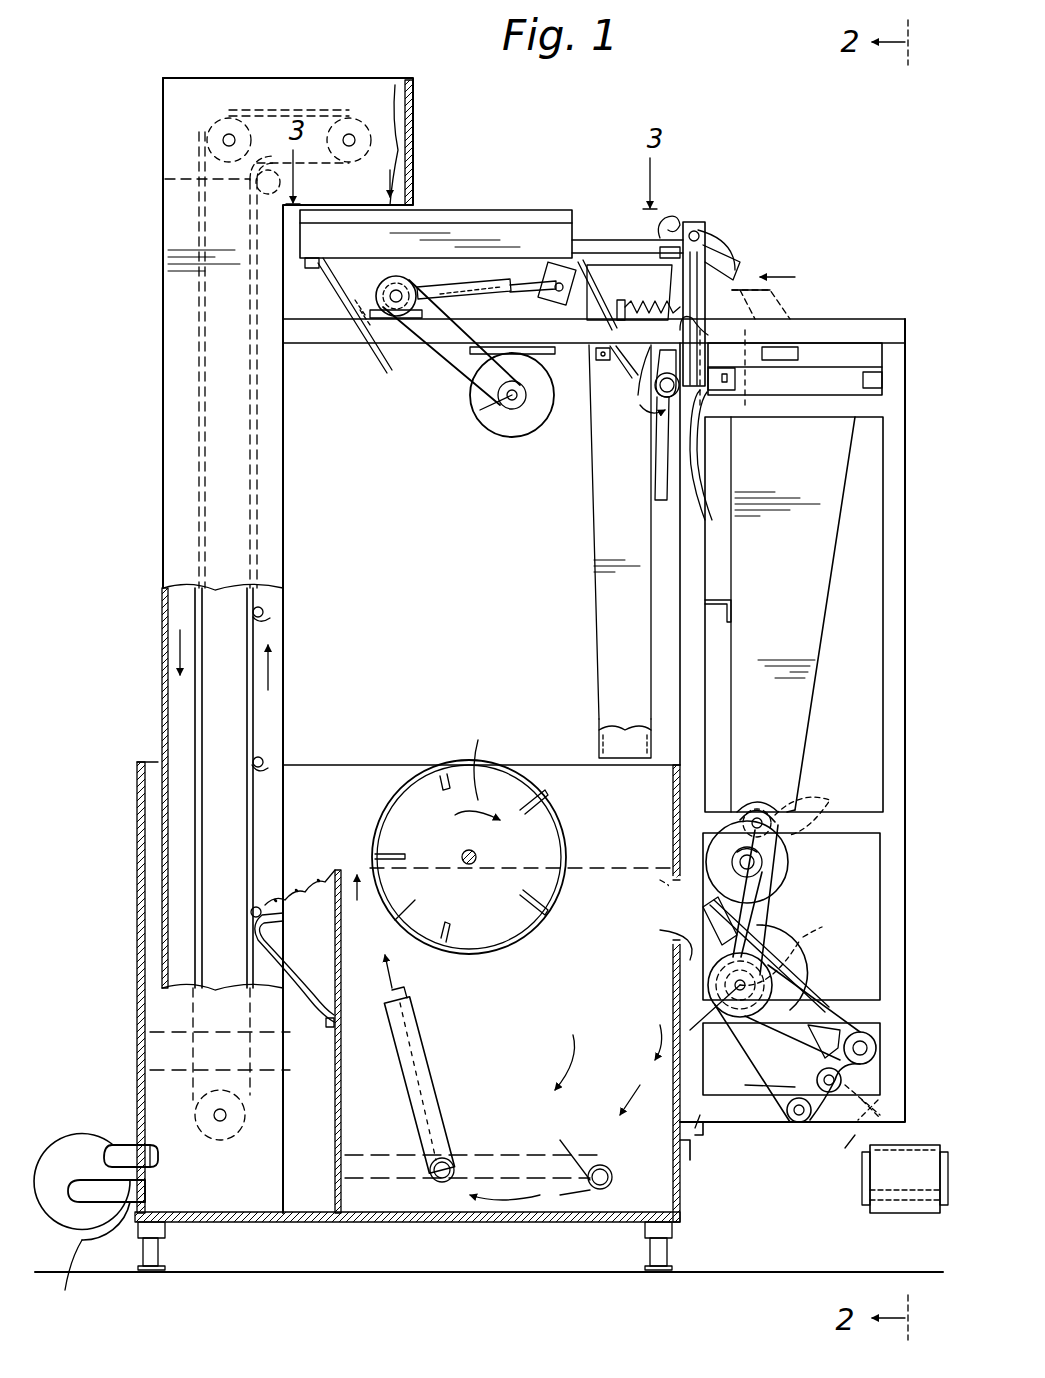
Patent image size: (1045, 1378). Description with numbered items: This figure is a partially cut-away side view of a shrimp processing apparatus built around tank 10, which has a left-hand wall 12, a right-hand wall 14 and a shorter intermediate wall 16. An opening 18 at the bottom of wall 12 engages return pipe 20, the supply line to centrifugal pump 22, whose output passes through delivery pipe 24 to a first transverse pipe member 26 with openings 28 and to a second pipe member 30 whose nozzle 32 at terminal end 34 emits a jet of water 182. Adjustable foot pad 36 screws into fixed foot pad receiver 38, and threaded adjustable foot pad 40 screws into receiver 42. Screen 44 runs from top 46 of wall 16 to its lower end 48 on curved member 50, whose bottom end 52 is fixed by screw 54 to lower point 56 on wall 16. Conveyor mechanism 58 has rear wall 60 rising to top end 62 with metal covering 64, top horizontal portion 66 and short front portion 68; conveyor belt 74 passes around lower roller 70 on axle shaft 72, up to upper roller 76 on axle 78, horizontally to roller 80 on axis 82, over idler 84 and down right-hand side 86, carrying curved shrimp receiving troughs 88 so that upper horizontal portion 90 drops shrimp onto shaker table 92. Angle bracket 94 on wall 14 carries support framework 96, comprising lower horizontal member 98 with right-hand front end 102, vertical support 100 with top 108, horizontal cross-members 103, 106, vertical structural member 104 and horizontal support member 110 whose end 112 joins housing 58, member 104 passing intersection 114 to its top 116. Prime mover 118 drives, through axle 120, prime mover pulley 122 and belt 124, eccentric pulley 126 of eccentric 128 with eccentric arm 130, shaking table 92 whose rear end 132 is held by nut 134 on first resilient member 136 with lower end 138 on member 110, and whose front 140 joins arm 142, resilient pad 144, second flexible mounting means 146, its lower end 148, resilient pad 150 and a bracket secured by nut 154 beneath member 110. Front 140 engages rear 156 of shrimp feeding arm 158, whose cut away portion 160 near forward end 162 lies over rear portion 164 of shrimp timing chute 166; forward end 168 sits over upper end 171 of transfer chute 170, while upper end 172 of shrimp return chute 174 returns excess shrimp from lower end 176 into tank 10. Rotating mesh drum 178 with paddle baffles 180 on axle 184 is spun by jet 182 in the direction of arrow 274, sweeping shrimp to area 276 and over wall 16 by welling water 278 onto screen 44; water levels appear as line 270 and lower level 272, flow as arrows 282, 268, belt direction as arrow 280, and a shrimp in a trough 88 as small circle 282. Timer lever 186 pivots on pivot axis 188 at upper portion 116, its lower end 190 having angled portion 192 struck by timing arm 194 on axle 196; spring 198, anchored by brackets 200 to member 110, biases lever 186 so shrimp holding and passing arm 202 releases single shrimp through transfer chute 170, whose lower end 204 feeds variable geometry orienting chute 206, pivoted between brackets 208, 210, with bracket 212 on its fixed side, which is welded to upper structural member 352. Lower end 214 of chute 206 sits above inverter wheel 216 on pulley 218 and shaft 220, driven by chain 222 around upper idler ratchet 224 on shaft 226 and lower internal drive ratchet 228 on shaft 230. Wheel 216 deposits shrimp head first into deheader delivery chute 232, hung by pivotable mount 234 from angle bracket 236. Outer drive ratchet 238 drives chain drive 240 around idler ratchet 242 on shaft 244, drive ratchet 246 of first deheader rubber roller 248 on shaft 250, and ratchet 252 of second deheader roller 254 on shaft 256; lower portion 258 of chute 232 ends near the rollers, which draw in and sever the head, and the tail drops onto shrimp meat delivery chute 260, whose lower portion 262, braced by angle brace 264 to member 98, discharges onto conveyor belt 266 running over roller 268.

The tank 10 is at (405, 1228).
The left-hand wall 12 is at (135, 830).
The right-hand wall 14 is at (695, 1190).
The intermediate wall 16 is at (345, 1113).
The opening 18 is at (148, 1193).
The return pipe 20 is at (62, 1276).
The centrifugal pump 22 is at (72, 1150).
The delivery pipe 24 is at (112, 1148).
The first transverse pipe member 26 is at (600, 1165).
The openings 28 is at (530, 1162).
The second pipe member 30 is at (428, 1085).
The nozzle 32 is at (405, 1000).
The terminal end 34 is at (422, 1013).
The adjustable foot pad 36 is at (650, 1258).
The fixed foot pad receiver 38 is at (645, 1232).
The threaded adjustable foot pad 40 is at (160, 1255).
The adjustable foot pad receiver 42 is at (167, 1230).
The screen 44 is at (295, 885).
The top 46 is at (318, 878).
The lower end 48 is at (287, 920).
The curved member 50 is at (292, 948).
The bottom end 52 is at (305, 978).
The screw 54 is at (320, 1022).
The lower point 56 is at (345, 1040).
The conveyor mechanism 58 is at (160, 590).
The rear wall 60 is at (163, 620).
The top end 62 is at (165, 78).
The metal covering 64 is at (165, 478).
The top horizontal portion 66 is at (287, 78).
The forward short front portion 68 is at (420, 168).
The lower roller 70 is at (137, 1066).
The axle shaft 72 is at (214, 1115).
The conveyor belt 74 is at (200, 740).
The upper roller 76 is at (232, 115).
The axle 78 is at (222, 140).
The roller 80 is at (349, 112).
The axis 82 is at (353, 136).
The idler 84 is at (167, 179).
The right-hand side 86 is at (290, 520).
The shrimp receiving troughs 88 is at (265, 614).
The upper horizontal portion 90 is at (418, 100).
The shaker table 92 is at (445, 198).
The angle bracket 94 is at (690, 1142).
The support framework 96 is at (912, 840).
The lower horizontal member 98 is at (712, 1124).
The vertical support 100 is at (893, 886).
The right-hand front end 102 is at (897, 1105).
The horizontal cross-member 103 is at (868, 1005).
The vertical structural member 104 is at (680, 912).
The horizontal cross-member 106 is at (812, 808).
The top 108 is at (898, 321).
The horizontal support member 110 is at (848, 321).
The end 112 is at (297, 347).
The intersection 114 is at (705, 337).
The top 116 is at (690, 218).
The prime mover 118 is at (515, 430).
The axle 120 is at (497, 403).
The prime mover pulley 122 is at (500, 430).
The belt 124 is at (437, 355).
The eccentric pulley 126 is at (402, 280).
The eccentric 128 is at (378, 292).
The eccentric arm 130 is at (452, 285).
The rear end 132 is at (312, 245).
The nut 134 is at (312, 268).
The first resilient member 136 is at (352, 335).
The lower end 138 is at (372, 360).
The front 140 is at (532, 247).
The arm 142 is at (552, 298).
The resilient pad 144 is at (590, 238).
The second flexible mounting means 146 is at (585, 320).
The lower end 148 is at (630, 378).
The resilient pad 150 is at (641, 382).
The nut 154 is at (650, 397).
The rear 156 is at (580, 240).
The shrimp feeding arm 158 is at (605, 238).
The cut away portion 160 is at (655, 218).
The forward end 162 is at (675, 247).
The rear portion 164 is at (640, 280).
The shrimp timing chute 166 is at (740, 258).
The forward end 168 is at (755, 270).
The transfer chute 170 is at (760, 300).
The upper end 171 is at (772, 290).
The upper end 172 is at (808, 275).
The shrimp return chute 174 is at (598, 555).
The lower end 176 is at (612, 745).
The rotating mesh drum 178 is at (560, 787).
The paddle baffles 180 is at (452, 930).
The jet of water 182 is at (395, 975).
The axle 184 is at (470, 850).
The timer lever 186 is at (715, 245).
The pivot axis 188 is at (698, 235).
The lower end 190 is at (692, 405).
The angled portion 192 is at (697, 425).
The timing arm 194 is at (700, 312).
The axle 196 is at (660, 500).
The spring 198 is at (622, 305).
The brackets 200 is at (622, 318).
The shrimp holding and passing arm 202 is at (718, 252).
The lower end 204 is at (770, 357).
The variable geometry orienting chute 206 is at (862, 480).
The bracket 208 is at (905, 386).
The bracket 210 is at (712, 392).
The bracket 212 is at (735, 600).
The lower end 214 is at (795, 778).
The shrimp longitudinal position inverter wheel 216 is at (772, 860).
The pulley 218 is at (762, 871).
The shaft 220 is at (760, 881).
The chain 222 is at (772, 905).
The upper idler ratchet 224 is at (822, 750).
The shaft 226 is at (757, 815).
The lower internal drive ratchet 228 is at (810, 935).
The shaft 230 is at (642, 1070).
The deheader delivery chute 232 is at (680, 932).
The pivotable mount 234 is at (677, 893).
The angle bracket 236 is at (677, 840).
The outer drive ratchet 238 is at (787, 965).
The chain drive 240 is at (750, 1065).
The idler ratchet 242 is at (790, 1120).
The shaft 244 is at (756, 1083).
The drive ratchet 246 is at (822, 1072).
The first deheader rubber roller 248 is at (812, 1058).
The shaft 250 is at (820, 1100).
The ratchet 252 is at (880, 1043).
The second deheader roller 254 is at (898, 1032).
The shaft 256 is at (870, 1055).
The lower portion 258 is at (826, 1004).
The shrimp meat delivery chute 260 is at (882, 1072).
The lower portion 262 is at (882, 1112).
The angle brace 264 is at (858, 1128).
The conveyor belt 266 is at (893, 1195).
The roller 268 is at (862, 1180).
The water level 270 is at (585, 865).
The lower water level 272 is at (235, 1030).
The arrow 274 is at (480, 800).
The area 276 is at (363, 901).
The welling up of water 278 is at (355, 860).
The arrow 280 is at (270, 660).
The small circle 282 is at (262, 758).
The upper structural member 352 is at (727, 372).